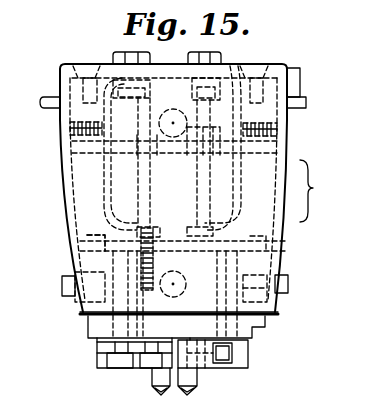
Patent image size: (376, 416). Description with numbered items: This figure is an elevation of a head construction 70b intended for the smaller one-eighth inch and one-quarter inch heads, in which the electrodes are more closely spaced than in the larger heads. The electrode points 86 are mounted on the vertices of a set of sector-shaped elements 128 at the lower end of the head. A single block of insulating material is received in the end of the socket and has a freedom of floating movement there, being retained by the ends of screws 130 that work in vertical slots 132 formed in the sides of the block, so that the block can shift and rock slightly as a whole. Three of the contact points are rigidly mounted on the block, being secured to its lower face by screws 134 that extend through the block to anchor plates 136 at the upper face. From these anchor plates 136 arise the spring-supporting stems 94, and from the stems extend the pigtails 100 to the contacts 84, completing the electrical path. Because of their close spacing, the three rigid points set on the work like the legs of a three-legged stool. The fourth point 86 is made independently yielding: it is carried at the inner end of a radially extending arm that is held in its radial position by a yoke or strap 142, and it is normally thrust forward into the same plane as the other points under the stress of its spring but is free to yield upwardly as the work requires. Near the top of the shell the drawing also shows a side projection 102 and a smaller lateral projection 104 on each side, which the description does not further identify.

The contacts 84 is at (151, 58).
The pigtails 100 is at (233, 82).
The spring-supporting stems 94 is at (192, 192).
The upper side tab 102 is at (300, 80).
The side mounting tab 104 is at (306, 106).
The construction 70b is at (325, 191).
The anchor plates 136 is at (80, 247).
The screws 130 is at (62, 286).
The vertical slots 132 is at (82, 311).
The sector-shaped elements 128 is at (97, 348).
The screws 134 is at (107, 364).
The electrode points 86 is at (197, 392).
The yoke or strap 142 is at (232, 369).